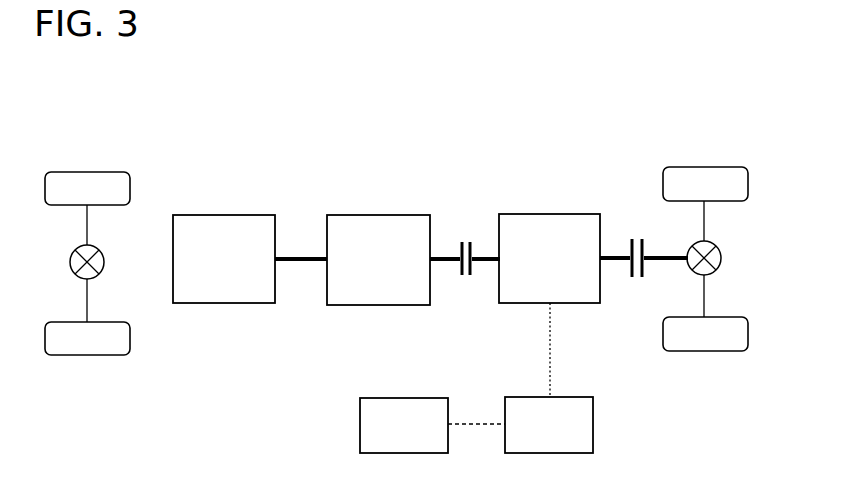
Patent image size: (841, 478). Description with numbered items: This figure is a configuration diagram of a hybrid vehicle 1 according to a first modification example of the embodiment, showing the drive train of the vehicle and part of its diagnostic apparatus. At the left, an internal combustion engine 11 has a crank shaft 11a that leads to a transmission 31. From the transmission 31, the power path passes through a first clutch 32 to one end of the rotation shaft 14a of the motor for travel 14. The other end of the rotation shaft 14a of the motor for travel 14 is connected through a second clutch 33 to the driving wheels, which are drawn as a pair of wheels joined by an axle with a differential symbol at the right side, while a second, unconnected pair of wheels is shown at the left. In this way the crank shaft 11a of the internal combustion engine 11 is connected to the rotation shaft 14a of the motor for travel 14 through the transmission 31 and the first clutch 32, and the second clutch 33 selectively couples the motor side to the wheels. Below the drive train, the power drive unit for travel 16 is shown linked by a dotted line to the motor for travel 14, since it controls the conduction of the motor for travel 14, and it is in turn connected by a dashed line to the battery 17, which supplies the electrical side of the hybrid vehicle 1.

The hybrid vehicle 1 is at (770, 136).
The internal combustion engine 11 is at (224, 215).
The crank shaft 11a is at (297, 258).
The transmission 31 is at (376, 215).
The first clutch 32 is at (462, 241).
The motor for travel 14 is at (549, 214).
The rotation shaft 14a is at (613, 257).
The second clutch 33 is at (644, 248).
The battery 17 is at (401, 398).
The power drive unit for travel 16 is at (593, 424).